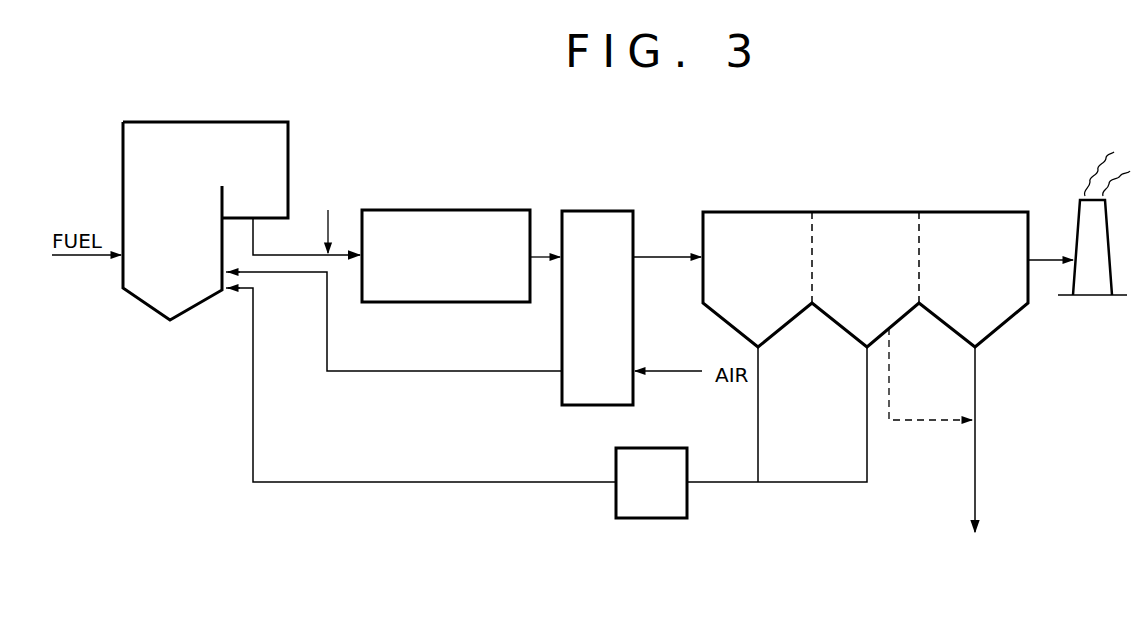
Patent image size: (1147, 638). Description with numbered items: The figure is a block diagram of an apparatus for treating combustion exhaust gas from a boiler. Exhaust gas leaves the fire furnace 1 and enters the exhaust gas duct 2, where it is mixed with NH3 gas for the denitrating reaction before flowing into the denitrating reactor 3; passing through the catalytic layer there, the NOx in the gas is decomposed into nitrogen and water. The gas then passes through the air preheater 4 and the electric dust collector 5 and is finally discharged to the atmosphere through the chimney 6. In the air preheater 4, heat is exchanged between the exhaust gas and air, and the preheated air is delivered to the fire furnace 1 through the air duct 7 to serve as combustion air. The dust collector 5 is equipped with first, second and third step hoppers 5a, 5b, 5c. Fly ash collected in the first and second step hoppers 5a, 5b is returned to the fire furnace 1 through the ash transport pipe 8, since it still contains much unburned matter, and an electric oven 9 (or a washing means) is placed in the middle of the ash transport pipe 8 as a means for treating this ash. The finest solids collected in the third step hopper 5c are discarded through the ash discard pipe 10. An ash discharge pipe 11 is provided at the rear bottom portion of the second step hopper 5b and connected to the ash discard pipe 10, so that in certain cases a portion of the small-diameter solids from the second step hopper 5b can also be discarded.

The fire furnace 1 is at (225, 122).
The exhaust gas duct 2 is at (343, 257).
The denitrating reactor 3 is at (445, 210).
The air preheater 4 is at (598, 211).
The electric dust collector 5 is at (865, 234).
The first step hopper 5a is at (758, 212).
The second step hopper 5b is at (862, 212).
The third step hopper 5c is at (970, 230).
The chimney 6 is at (1077, 221).
The air duct 7 is at (450, 371).
The ash transport pipe 8 is at (443, 482).
The electric oven 9 is at (653, 518).
The ash discard pipe 10 is at (977, 465).
The ash discharge pipe 11 is at (929, 423).